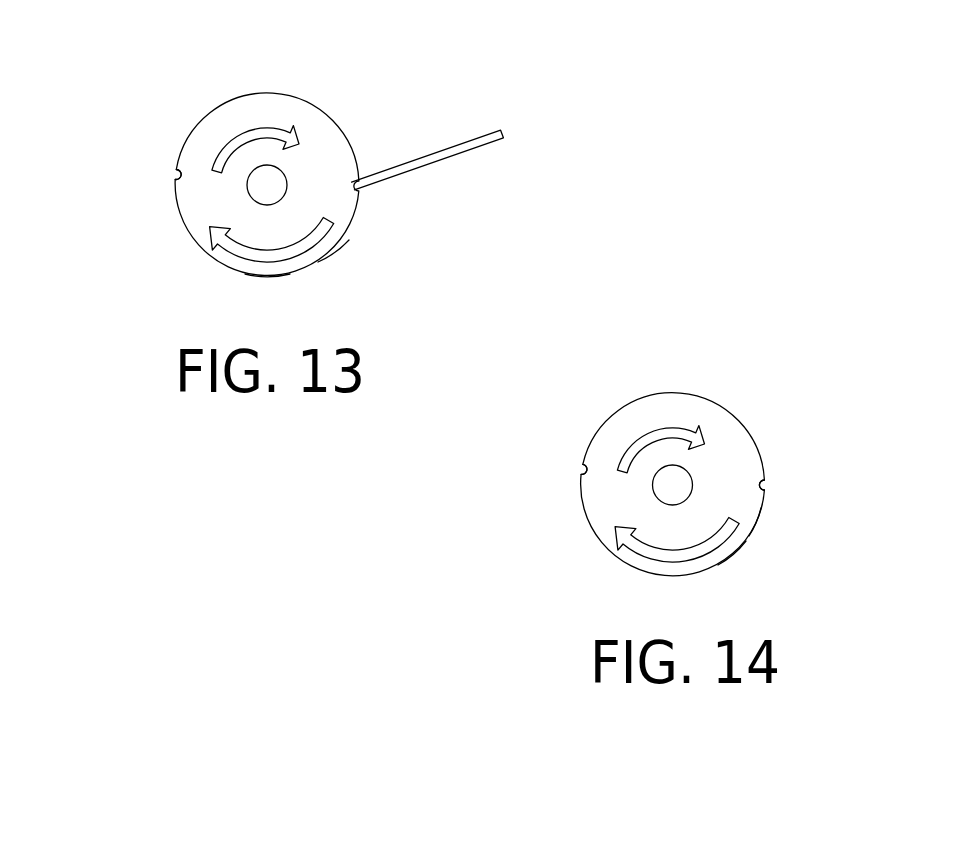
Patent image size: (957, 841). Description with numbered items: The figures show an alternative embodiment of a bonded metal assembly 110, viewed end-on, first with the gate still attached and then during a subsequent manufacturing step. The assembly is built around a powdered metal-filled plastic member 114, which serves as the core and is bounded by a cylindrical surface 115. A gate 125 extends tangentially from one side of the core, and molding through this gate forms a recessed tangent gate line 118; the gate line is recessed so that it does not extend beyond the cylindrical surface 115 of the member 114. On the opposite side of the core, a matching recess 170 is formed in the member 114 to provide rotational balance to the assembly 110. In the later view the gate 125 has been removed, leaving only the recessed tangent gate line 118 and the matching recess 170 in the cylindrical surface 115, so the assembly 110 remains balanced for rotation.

In FIG. 13, the bonded metal assembly 110 is at (323, 112).
In FIG. 14, the bonded metal assembly 110 is at (712, 398).
In FIG. 13, the powdered metal-filled plastic member 114 is at (332, 250).
In FIG. 14, the powdered metal-filled plastic member 114 is at (733, 552).
In FIG. 13, the cylindrical surface 115 is at (273, 278).
In FIG. 14, the cylindrical surface 115 is at (758, 523).
In FIG. 14, the recessed tangent gate line 118 is at (762, 487).
In FIG. 13, the gate 125 is at (460, 141).
In FIG. 13, the matching recess 170 is at (179, 173).
In FIG. 14, the matching recess 170 is at (584, 471).